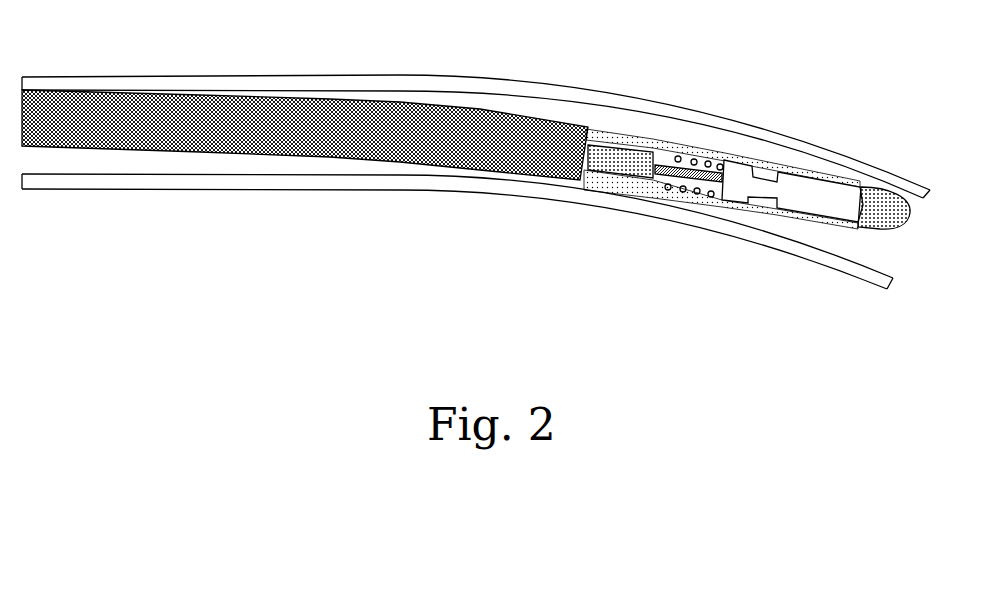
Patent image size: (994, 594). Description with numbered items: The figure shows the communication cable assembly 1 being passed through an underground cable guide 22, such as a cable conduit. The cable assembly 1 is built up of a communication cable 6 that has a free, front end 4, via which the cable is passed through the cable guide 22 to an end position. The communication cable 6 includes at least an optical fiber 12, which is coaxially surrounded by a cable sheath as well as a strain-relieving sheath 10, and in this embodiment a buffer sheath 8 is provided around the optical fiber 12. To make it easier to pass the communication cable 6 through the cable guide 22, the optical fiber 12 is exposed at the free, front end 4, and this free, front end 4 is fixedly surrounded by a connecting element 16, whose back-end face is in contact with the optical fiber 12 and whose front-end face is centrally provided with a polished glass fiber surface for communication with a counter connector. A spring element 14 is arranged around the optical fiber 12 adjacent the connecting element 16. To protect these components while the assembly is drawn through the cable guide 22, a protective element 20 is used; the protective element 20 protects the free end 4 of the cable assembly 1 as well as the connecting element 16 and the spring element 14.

The communication cable assembly 1 is at (215, 112).
The free, front end 4 is at (568, 122).
The communication cable 6 is at (215, 112).
The buffer sheath 8 is at (605, 155).
The strain-relieving sheath 10 is at (650, 140).
The optical fiber 12 is at (680, 167).
The spring element 14 is at (709, 164).
The connecting element 16 is at (815, 195).
The protective element 20 is at (902, 215).
The underground cable guide 22 is at (203, 183).